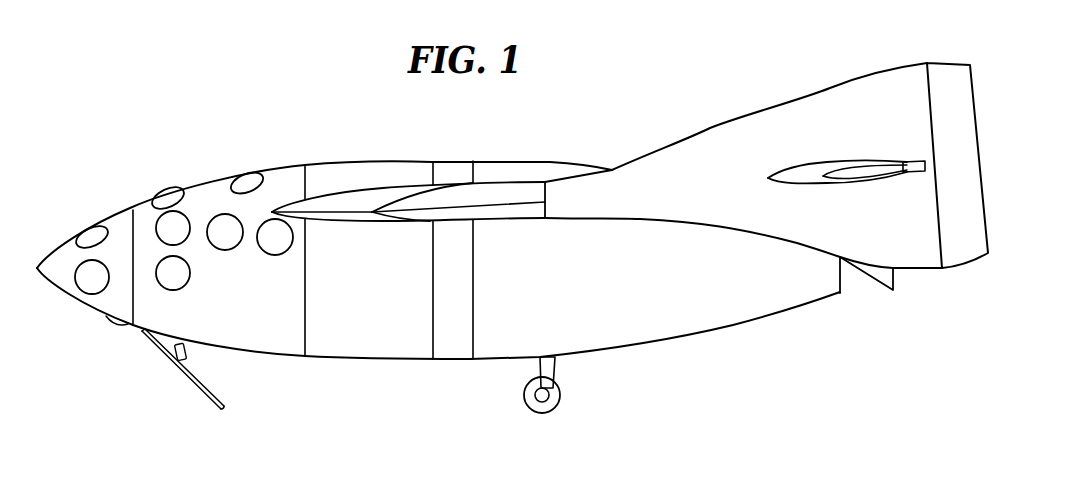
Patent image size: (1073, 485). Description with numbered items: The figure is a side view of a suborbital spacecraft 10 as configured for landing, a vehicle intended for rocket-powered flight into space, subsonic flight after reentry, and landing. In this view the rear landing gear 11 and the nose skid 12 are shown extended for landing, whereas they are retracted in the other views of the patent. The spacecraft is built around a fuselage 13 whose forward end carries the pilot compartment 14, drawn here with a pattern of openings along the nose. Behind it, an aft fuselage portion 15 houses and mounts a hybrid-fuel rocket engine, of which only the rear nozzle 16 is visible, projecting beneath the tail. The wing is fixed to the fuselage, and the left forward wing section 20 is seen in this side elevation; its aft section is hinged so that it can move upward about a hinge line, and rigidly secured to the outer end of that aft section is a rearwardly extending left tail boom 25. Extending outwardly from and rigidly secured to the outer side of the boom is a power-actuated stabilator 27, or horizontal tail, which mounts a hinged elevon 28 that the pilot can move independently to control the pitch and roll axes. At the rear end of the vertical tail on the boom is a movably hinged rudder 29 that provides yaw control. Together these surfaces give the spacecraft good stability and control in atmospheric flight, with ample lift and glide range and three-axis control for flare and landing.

The suborbital spacecraft 10 is at (328, 131).
The rear landing gear 11 is at (555, 370).
The nose skid 12 is at (197, 383).
The fuselage 13 is at (395, 364).
The pilot compartment 14 is at (203, 195).
The aft fuselage portion 15 is at (660, 296).
The rear nozzle 16 is at (872, 285).
The left forward wing section 20 is at (333, 223).
The left tail boom 25 is at (775, 147).
The stabilator 27 is at (810, 184).
The elevon 28 is at (917, 160).
The rudder 29 is at (950, 108).